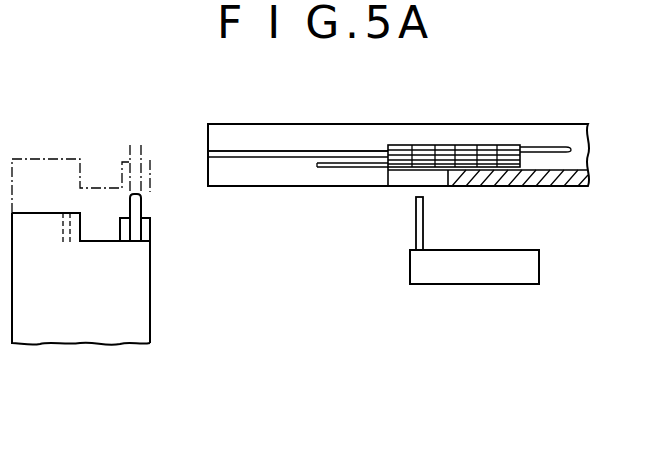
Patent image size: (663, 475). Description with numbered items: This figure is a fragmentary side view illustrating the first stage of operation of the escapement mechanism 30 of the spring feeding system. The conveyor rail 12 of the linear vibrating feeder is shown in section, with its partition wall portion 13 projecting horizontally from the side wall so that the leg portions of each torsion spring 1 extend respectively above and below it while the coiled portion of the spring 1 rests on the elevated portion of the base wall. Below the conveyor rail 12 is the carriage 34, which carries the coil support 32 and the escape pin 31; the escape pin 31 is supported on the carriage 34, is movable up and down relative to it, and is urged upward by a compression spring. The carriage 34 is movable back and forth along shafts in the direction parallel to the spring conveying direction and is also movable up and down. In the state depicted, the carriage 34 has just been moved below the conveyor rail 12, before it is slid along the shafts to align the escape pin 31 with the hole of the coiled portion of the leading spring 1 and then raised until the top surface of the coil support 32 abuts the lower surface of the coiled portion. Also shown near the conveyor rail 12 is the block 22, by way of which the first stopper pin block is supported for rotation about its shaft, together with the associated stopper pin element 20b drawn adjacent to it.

The torsion spring 1 is at (465, 145).
The conveyor rail 12 is at (306, 117).
The partition wall portion 13 is at (234, 150).
The pin 20b is at (416, 214).
The block 22 is at (437, 280).
The escapement mechanism 30 is at (312, 344).
The escape pin 31 is at (143, 145).
The coil support 32 is at (112, 222).
The carriage 34 is at (70, 330).